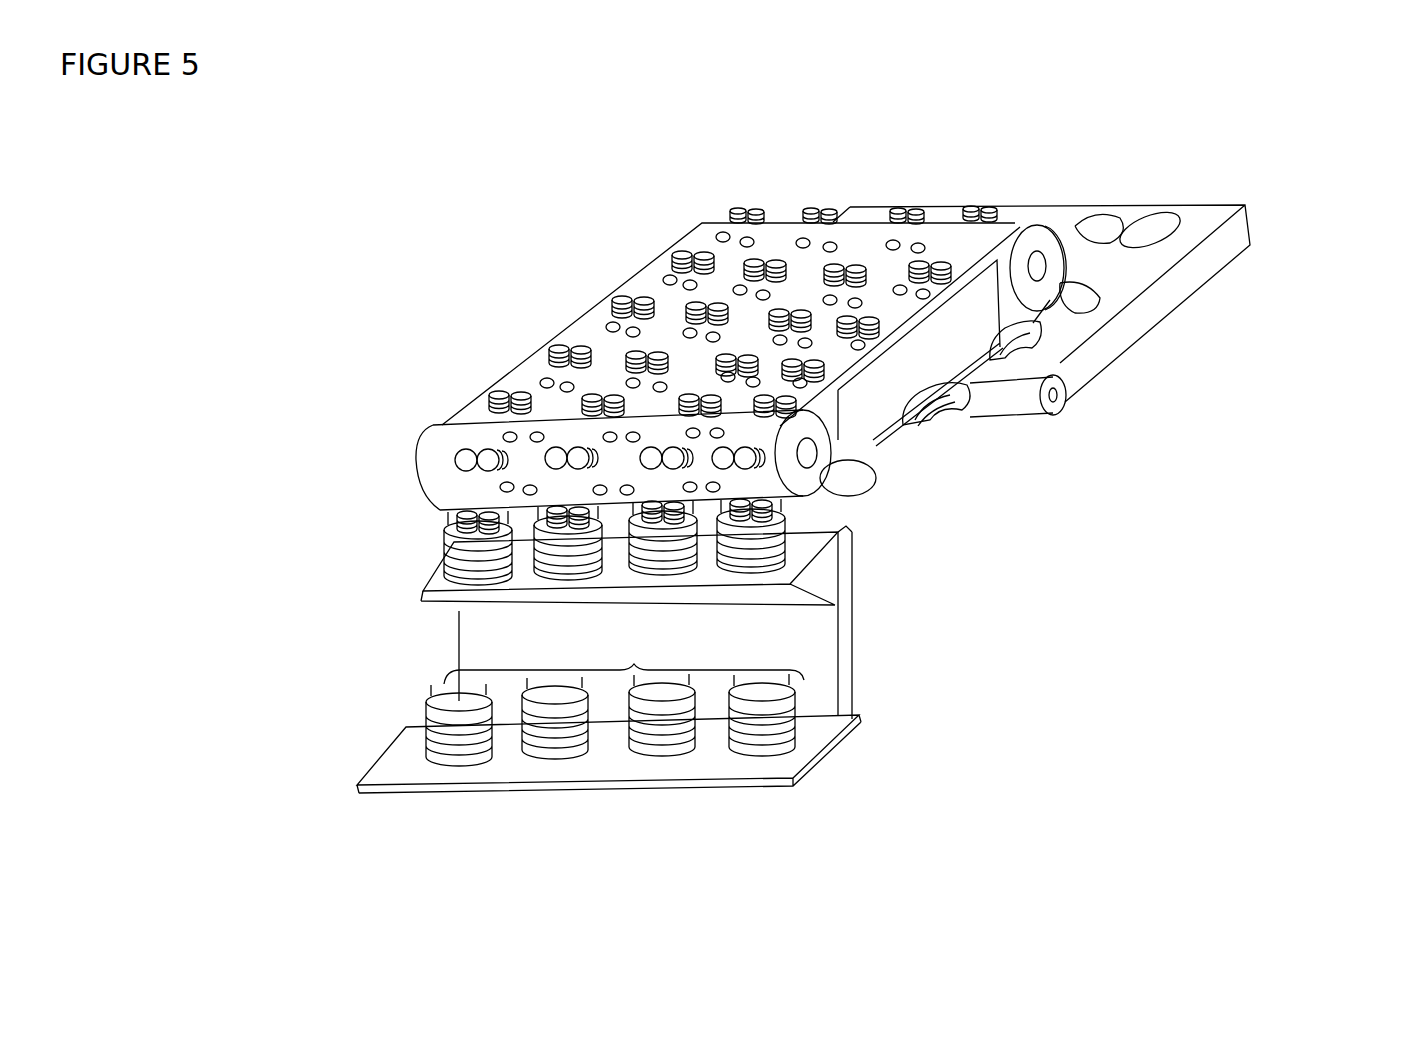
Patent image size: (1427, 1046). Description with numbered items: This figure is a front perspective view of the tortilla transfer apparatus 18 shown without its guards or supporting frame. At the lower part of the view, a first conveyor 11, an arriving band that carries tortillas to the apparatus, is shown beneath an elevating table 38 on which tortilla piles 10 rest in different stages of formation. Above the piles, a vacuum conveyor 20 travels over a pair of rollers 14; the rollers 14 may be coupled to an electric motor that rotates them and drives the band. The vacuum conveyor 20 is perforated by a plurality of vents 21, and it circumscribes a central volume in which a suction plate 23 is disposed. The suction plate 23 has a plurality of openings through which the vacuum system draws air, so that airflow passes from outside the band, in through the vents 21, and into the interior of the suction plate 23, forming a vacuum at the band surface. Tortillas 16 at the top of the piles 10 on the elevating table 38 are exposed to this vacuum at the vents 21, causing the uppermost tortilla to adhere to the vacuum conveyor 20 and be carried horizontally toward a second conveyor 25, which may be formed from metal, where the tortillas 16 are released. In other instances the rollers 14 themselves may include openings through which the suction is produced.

The tortilla piles 10 is at (615, 698).
The first conveyor 11 is at (620, 790).
The rollers 14 is at (1043, 290).
The tortillas 16 is at (1128, 217).
The tortilla transfer apparatus 18 is at (1191, 569).
The vacuum conveyor 20 is at (617, 262).
The vents 21 is at (733, 493).
The suction plate 23 is at (933, 373).
The second conveyor 25 is at (1216, 187).
The elevating table 38 is at (803, 580).